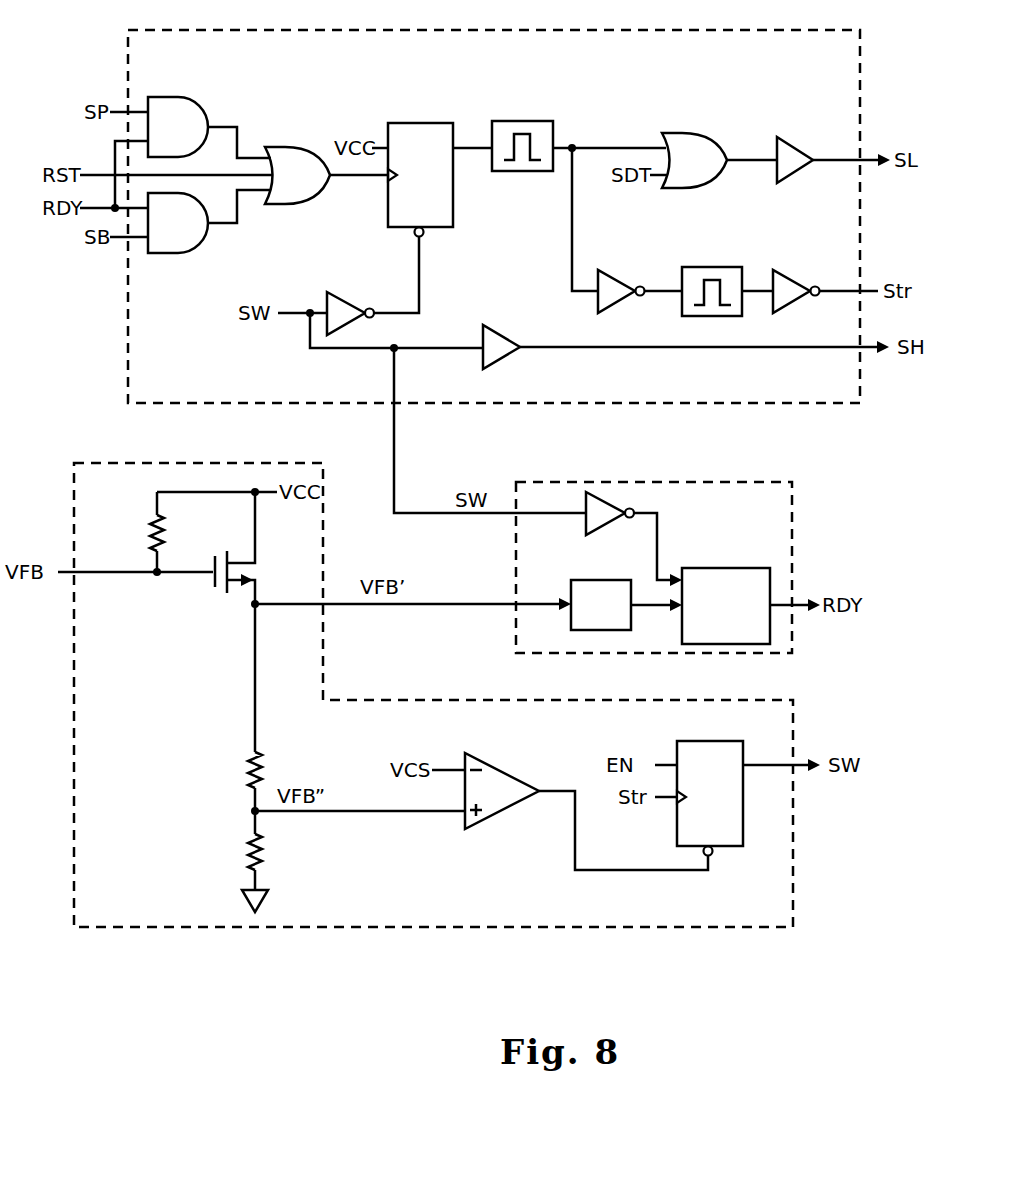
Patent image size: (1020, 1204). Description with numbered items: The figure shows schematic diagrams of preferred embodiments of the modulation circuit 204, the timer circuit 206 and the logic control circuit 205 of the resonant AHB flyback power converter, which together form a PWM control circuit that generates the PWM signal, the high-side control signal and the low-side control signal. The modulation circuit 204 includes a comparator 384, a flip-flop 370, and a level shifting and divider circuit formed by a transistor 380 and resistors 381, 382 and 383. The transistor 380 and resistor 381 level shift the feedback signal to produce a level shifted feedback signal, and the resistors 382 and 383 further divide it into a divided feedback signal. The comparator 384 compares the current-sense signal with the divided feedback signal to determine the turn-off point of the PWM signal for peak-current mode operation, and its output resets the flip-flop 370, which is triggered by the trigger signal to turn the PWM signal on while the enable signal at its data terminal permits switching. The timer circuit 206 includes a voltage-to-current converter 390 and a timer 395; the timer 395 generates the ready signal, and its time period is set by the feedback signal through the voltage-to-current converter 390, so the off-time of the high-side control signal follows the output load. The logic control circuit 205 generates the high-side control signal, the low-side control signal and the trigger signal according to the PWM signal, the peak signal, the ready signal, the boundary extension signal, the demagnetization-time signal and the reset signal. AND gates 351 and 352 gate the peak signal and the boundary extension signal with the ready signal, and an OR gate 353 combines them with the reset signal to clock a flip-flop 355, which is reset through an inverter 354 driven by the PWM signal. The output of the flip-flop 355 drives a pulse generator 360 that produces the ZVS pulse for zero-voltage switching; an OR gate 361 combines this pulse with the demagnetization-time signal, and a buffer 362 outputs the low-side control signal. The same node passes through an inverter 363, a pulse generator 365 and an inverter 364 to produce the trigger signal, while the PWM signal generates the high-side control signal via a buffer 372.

The modulation circuit 204 is at (245, 463).
The logic control circuit 205 is at (815, 30).
The timer circuit 206 is at (748, 482).
The AND gate 351 is at (176, 97).
The AND gate 352 is at (176, 253).
The OR gate 353 is at (280, 204).
The inverter 354 is at (338, 292).
The flip-flop 355 is at (407, 123).
The pulse generator 360 is at (528, 121).
The OR gate 361 is at (680, 133).
The buffer 362 is at (790, 137).
The inverter 363 is at (612, 270).
The inverter 364 is at (786, 270).
The pulse generator 365 is at (700, 267).
The flip-flop 370 is at (697, 741).
The buffer 372 is at (497, 325).
The transistor 380 is at (258, 548).
The resistor 381 is at (134, 532).
The resistor 382 is at (234, 781).
The resistor 383 is at (237, 861).
The comparator 384 is at (497, 760).
The voltage-to-current converter 390 is at (580, 580).
The timer 395 is at (700, 568).